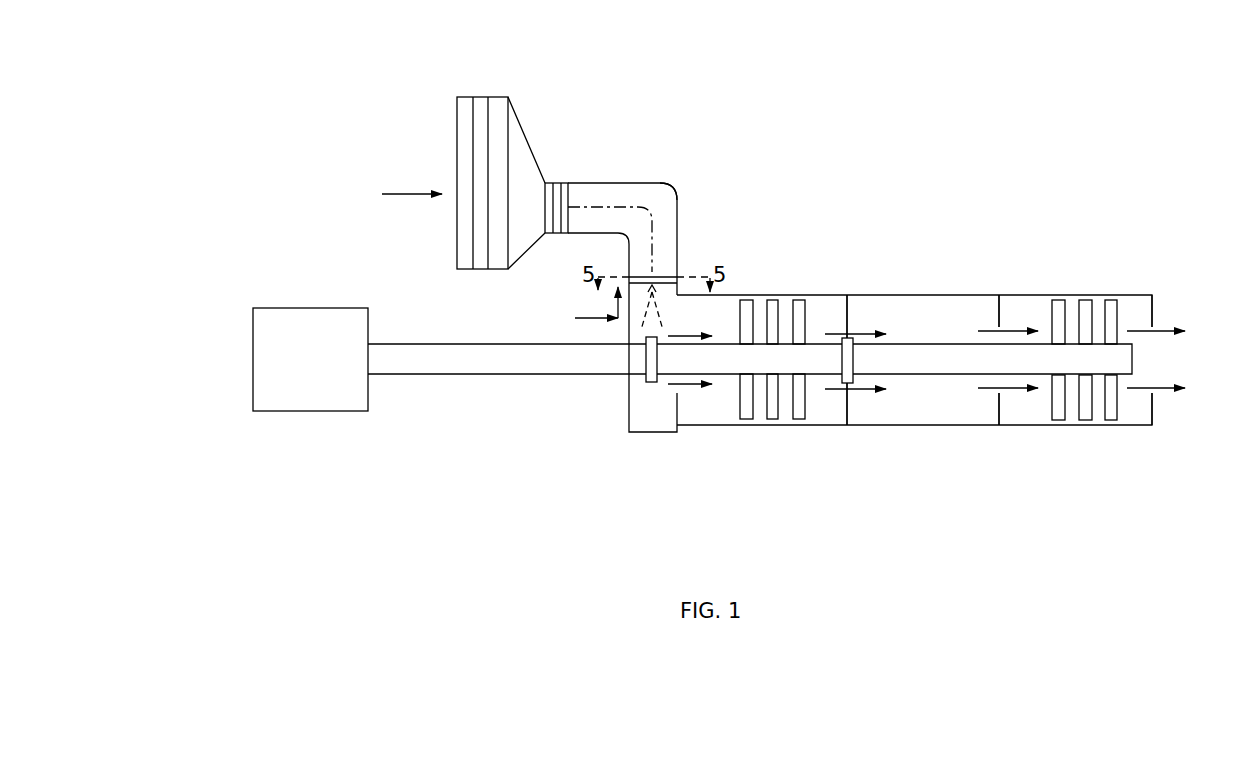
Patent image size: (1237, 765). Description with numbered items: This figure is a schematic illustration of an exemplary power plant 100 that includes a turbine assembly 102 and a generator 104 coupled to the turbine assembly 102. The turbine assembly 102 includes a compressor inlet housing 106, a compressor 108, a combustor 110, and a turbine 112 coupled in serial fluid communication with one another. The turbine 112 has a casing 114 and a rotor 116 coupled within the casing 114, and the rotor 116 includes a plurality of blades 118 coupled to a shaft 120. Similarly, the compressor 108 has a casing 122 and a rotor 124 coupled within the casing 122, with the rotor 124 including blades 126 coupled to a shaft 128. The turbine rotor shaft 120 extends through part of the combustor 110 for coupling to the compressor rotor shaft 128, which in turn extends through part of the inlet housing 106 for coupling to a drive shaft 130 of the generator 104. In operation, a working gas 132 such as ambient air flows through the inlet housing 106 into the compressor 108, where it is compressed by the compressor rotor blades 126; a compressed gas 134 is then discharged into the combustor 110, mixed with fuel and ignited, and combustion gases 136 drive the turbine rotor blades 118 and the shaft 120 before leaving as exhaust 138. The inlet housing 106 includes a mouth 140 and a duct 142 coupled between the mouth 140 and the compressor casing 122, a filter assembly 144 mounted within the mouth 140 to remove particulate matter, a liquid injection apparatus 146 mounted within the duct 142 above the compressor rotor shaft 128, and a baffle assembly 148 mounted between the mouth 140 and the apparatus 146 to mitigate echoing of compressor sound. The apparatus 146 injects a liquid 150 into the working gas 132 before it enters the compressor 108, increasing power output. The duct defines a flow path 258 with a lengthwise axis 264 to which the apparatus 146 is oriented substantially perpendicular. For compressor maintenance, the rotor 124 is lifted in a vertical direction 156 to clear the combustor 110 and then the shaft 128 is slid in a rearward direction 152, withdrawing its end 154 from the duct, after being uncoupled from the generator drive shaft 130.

The power plant 100 is at (895, 52).
The turbine assembly 102 is at (923, 222).
The generator 104 is at (253, 308).
The compressor inlet housing 106 is at (643, 160).
The compressor 108 is at (762, 432).
The combustor 110 is at (928, 432).
The turbine 112 is at (1072, 432).
The casing 114 is at (1023, 295).
The rotor 116 is at (1130, 315).
The blades 118 is at (1093, 312).
The shaft 120 is at (1073, 343).
The casing 122 is at (830, 293).
The rotor 124 is at (730, 298).
The blades 126 is at (757, 305).
The shaft 128 is at (787, 343).
The drive shaft 130 is at (450, 374).
The working gas 132 is at (397, 194).
The compressed gas 134 is at (857, 338).
The combustion gases 136 is at (1007, 328).
The exhaust 138 is at (1168, 330).
The mouth 140 is at (508, 110).
The duct 142 is at (668, 190).
The filter assembly 144 is at (515, 152).
The liquid injection apparatus 146 is at (662, 275).
The baffle assembly 148 is at (571, 197).
The liquid 150 is at (652, 327).
The rearward direction 152 is at (597, 318).
The end 154 is at (656, 356).
The vertical direction 156 is at (612, 306).
The flow path 258 is at (650, 198).
The lengthwise axis 264 is at (655, 275).